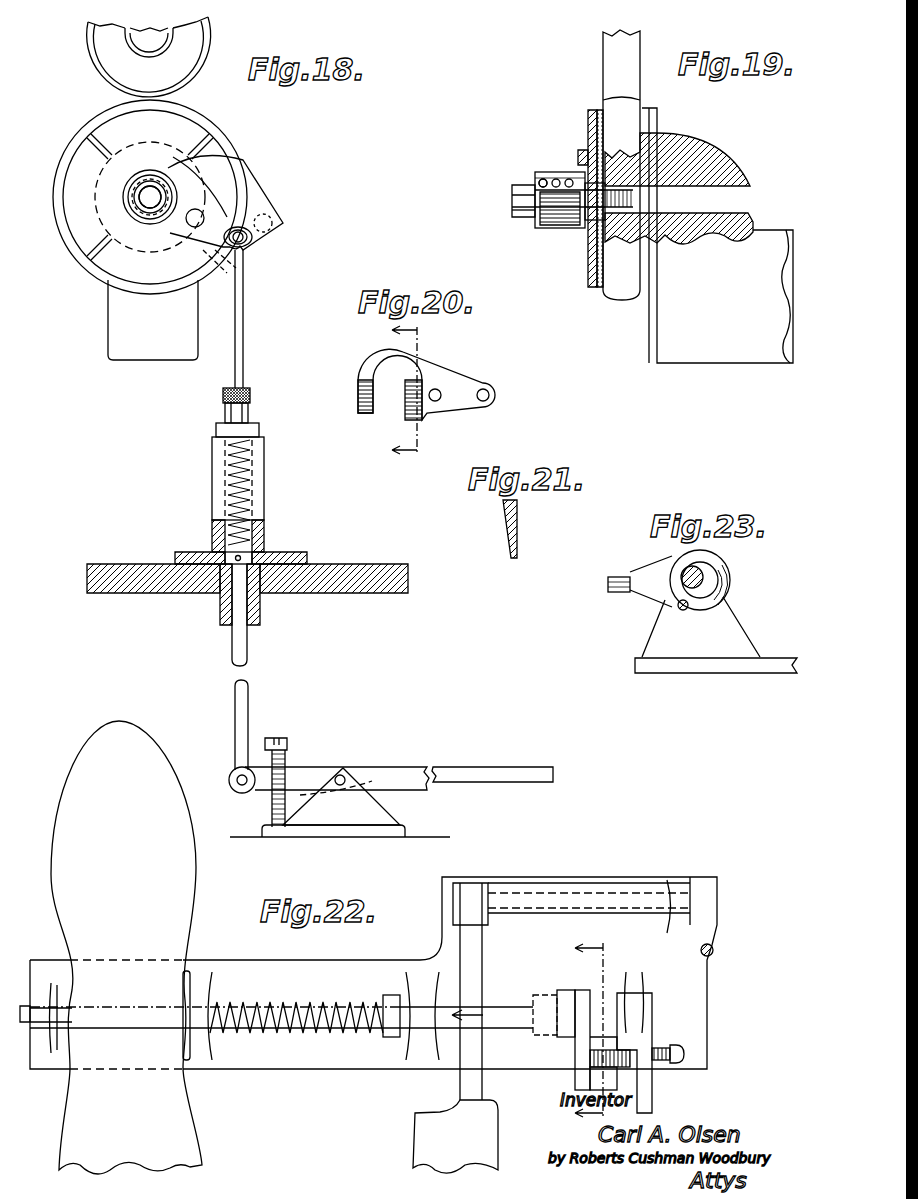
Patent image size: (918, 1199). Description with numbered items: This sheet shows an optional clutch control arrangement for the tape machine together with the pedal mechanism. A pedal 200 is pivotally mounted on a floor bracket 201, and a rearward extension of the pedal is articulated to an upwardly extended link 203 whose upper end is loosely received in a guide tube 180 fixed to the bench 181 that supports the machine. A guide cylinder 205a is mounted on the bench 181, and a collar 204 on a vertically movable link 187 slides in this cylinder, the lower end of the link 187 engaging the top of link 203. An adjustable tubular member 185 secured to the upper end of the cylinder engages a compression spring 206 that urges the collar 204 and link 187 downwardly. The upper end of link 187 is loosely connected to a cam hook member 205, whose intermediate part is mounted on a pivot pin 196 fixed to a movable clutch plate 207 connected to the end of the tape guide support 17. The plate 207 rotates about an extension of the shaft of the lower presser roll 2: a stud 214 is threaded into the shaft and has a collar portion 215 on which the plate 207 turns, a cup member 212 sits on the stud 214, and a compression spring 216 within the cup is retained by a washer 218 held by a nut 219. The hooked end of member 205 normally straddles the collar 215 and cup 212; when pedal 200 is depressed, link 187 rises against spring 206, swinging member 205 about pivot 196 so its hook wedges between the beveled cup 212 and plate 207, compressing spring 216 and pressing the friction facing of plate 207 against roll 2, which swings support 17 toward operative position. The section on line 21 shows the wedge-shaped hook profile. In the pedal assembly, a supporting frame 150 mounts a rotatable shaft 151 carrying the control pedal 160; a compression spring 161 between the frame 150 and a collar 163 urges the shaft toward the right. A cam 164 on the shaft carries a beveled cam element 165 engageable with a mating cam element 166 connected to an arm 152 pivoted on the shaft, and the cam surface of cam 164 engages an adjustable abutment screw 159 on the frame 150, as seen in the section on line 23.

In FIG. 18, the presser roll 2 is at (100, 280).
In FIG. 19, the presser roll 2 is at (623, 293).
In FIG. 18, the tape guide supporting arm 17 is at (275, 218).
In FIG. 20, the section line 21 is at (420, 392).
In FIG. 22, the section line 23 is at (605, 1040).
In FIG. 23, the supporting frame 150 is at (750, 645).
In FIG. 22, the supporting frame 150 is at (257, 960).
In FIG. 22, the rotatable shaft 151 is at (508, 1013).
In FIG. 22, the arm 152 is at (690, 1100).
In FIG. 23, the adjustable abutment screw 159 is at (683, 610).
In FIG. 22, the control pedal 160 is at (126, 947).
In FIG. 22, the compression spring 161 is at (342, 1002).
In FIG. 22, the collar 163 is at (382, 1002).
In FIG. 23, the cam 164 is at (730, 590).
In FIG. 22, the cam 164 is at (600, 1000).
In FIG. 23, the cam element 165 is at (620, 577).
In FIG. 22, the cam element 165 is at (595, 1085).
In FIG. 22, the cam element 166 is at (620, 1080).
In FIG. 18, the guide tube 180 is at (262, 612).
In FIG. 18, the bench 181 is at (360, 594).
In FIG. 18, the adjustable tubular member 185 is at (251, 408).
In FIG. 18, the vertically movable link 187 is at (244, 322).
In FIG. 18, the pivot pin 196 is at (196, 214).
In FIG. 18, the pedal 200 is at (378, 770).
In FIG. 18, the bracket 201 is at (380, 803).
In FIG. 18, the link 203 is at (235, 688).
In FIG. 18, the collar 204 is at (262, 548).
In FIG. 18, the cam hook member 205 is at (225, 220).
In FIG. 19, the cam hook member 205 is at (585, 148).
In FIG. 20, the cam hook member 205 is at (437, 378).
In FIG. 21, the cam hook member 205 is at (503, 510).
In FIG. 18, the guide cylinder 205a is at (262, 462).
In FIG. 18, the compression spring 206 is at (212, 538).
In FIG. 18, the clutch plate 207 is at (88, 232).
In FIG. 19, the clutch plate 207 is at (590, 127).
In FIG. 19, the cup member 212 is at (553, 172).
In FIG. 18, the stud 214 is at (148, 195).
In FIG. 19, the stud 214 is at (512, 193).
In FIG. 19, the collar portion 215 is at (590, 222).
In FIG. 19, the compression spring 216 is at (548, 222).
In FIG. 19, the washer 218 is at (540, 183).
In FIG. 19, the nut 219 is at (525, 213).